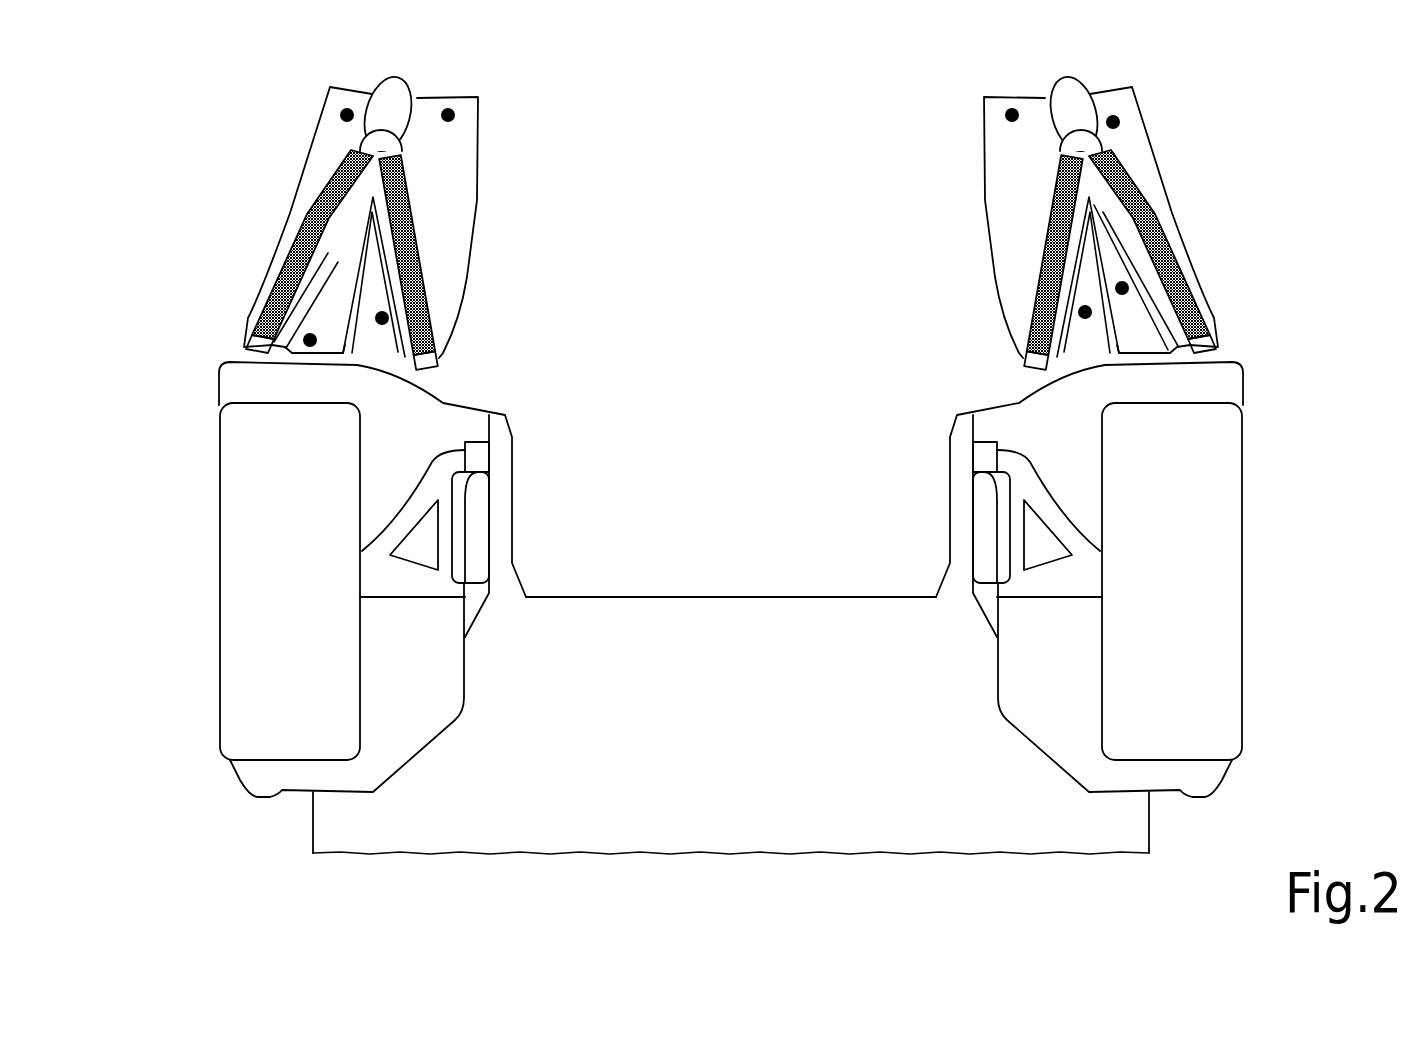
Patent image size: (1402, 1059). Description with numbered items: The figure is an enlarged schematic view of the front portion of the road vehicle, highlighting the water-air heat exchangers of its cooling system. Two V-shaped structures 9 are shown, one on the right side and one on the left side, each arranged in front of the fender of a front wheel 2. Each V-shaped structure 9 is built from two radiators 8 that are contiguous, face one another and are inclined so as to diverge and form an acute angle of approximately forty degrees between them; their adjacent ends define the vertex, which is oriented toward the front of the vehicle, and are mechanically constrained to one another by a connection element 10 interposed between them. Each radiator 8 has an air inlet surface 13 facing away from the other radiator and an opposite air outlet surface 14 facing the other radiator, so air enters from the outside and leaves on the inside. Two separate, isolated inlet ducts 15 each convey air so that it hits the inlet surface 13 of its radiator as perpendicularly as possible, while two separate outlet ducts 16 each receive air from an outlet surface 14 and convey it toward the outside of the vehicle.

The front wheel 2 is at (283, 583).
The radiator 8 is at (282, 280).
The V-shaped structure 9 is at (197, 106).
The connection element 10 is at (383, 143).
The air inlet surface 13 is at (292, 221).
The air outlet surface 14 is at (326, 266).
The inlet duct 15 is at (346, 107).
The outlet duct 16 is at (389, 316).